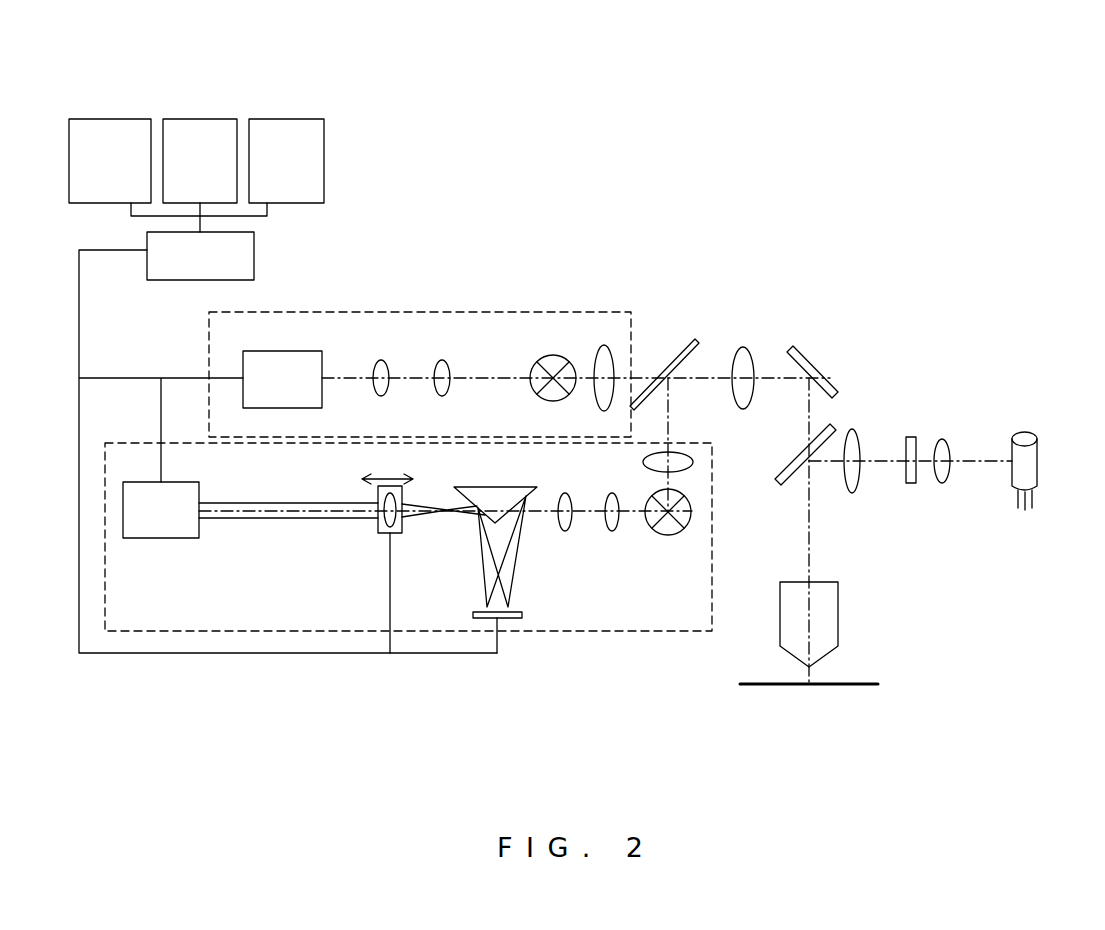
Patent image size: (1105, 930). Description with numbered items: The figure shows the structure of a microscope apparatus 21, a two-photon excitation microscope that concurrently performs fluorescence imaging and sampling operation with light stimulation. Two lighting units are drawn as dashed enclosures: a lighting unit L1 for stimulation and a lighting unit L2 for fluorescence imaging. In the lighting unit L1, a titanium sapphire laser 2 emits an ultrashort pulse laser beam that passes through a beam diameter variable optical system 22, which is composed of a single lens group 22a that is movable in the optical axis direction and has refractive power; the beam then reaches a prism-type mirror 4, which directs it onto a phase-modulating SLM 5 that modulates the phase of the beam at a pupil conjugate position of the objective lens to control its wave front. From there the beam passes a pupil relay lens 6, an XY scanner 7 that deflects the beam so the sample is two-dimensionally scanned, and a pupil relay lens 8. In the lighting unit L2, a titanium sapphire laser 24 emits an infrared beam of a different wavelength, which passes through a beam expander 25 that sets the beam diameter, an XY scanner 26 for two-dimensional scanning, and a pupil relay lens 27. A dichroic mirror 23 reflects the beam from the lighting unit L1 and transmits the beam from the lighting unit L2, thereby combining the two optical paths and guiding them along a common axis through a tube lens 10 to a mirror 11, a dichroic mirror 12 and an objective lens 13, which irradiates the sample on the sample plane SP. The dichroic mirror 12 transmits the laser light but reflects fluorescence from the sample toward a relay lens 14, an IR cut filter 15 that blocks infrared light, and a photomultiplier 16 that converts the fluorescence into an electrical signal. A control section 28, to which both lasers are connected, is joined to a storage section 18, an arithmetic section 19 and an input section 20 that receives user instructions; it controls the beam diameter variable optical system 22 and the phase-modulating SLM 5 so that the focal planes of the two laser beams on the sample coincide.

The microscope apparatus 21 is at (1038, 73).
The storage section 18 is at (131, 119).
The arithmetic section 19 is at (200, 119).
The input section 20 is at (267, 119).
The control section 28 is at (254, 241).
The lighting unit for stimulation L1 is at (627, 632).
The lighting unit for fluorescence imaging L2 is at (492, 312).
The titanium sapphire laser 24 is at (283, 351).
The beam expander 25 is at (370, 360).
The XY scanner 26 is at (548, 356).
The pupil relay lens 27 is at (600, 346).
The dichroic mirror 23 is at (696, 340).
The tube lens 10 is at (740, 350).
The mirror 11 is at (812, 358).
The dichroic mirror 12 is at (792, 472).
The relay lens 14 is at (838, 496).
The IR cut filter 15 is at (911, 437).
The photomultiplier 16 is at (1022, 439).
The objective lens 13 is at (838, 601).
The sample plane SP is at (865, 682).
The titanium sapphire laser 2 is at (158, 540).
The beam diameter variable optical system 22 is at (381, 535).
The lens group 22a is at (396, 535).
The prism-type mirror 4 is at (497, 487).
The phase-modulating SLM 5 is at (473, 613).
The pupil relay lens 6 is at (623, 538).
The XY scanner 7 is at (667, 535).
The pupil relay lens 8 is at (645, 463).